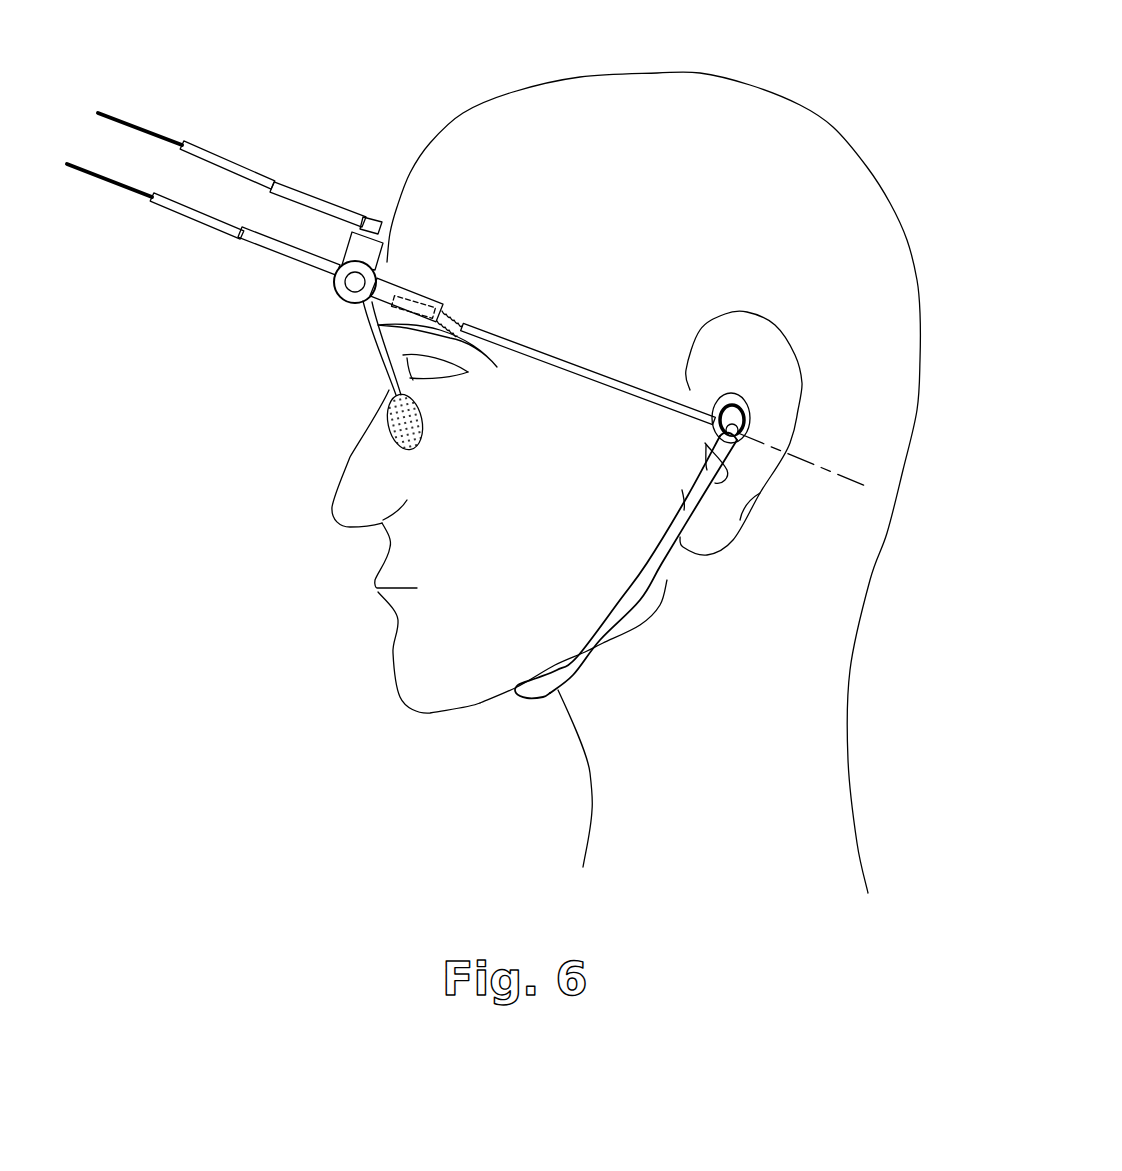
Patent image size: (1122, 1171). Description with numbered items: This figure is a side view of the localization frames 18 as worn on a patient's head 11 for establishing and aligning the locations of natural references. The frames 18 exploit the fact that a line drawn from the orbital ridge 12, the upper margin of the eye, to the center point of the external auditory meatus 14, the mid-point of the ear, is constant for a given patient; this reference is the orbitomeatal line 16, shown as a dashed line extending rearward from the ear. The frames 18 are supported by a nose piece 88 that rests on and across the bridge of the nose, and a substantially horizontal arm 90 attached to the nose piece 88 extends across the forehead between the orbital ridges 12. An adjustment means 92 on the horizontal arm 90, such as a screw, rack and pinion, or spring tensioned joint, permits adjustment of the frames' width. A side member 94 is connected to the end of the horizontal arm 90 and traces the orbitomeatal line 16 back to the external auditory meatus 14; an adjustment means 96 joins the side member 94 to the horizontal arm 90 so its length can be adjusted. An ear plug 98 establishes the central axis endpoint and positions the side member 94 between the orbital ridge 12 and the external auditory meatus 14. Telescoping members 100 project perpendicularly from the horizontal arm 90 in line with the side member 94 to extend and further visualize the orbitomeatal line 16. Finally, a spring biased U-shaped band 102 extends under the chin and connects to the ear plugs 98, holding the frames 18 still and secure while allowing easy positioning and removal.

The head 11 is at (808, 88).
The orbital ridge 12 is at (372, 324).
The external auditory meatus 14 is at (738, 430).
The orbitomeatal line 16 is at (822, 467).
The localization frames 18 is at (516, 265).
The nose piece 88 is at (387, 448).
The horizontal arm 90 is at (322, 234).
The adjustment means 92 is at (384, 233).
The side member 94 is at (552, 352).
The adjustment means 96 is at (440, 287).
The ear plugs 98 is at (738, 388).
The telescoping members 100 is at (228, 160).
The U-shaped band 102 is at (640, 578).